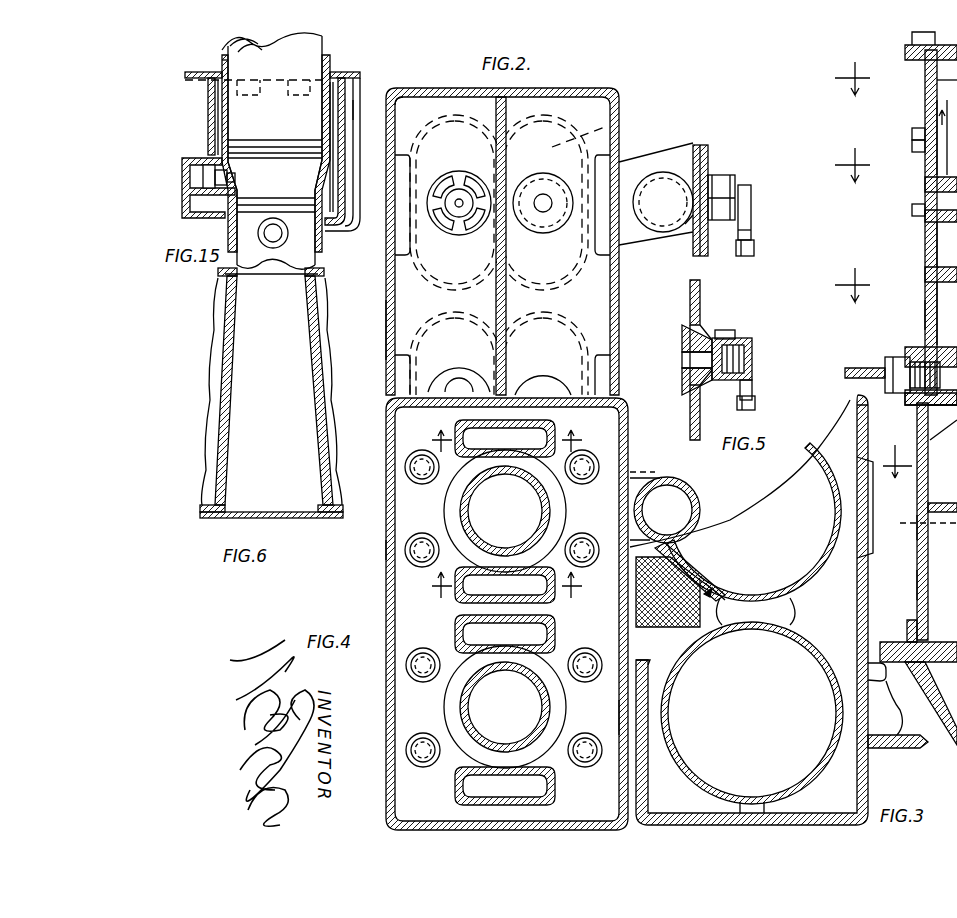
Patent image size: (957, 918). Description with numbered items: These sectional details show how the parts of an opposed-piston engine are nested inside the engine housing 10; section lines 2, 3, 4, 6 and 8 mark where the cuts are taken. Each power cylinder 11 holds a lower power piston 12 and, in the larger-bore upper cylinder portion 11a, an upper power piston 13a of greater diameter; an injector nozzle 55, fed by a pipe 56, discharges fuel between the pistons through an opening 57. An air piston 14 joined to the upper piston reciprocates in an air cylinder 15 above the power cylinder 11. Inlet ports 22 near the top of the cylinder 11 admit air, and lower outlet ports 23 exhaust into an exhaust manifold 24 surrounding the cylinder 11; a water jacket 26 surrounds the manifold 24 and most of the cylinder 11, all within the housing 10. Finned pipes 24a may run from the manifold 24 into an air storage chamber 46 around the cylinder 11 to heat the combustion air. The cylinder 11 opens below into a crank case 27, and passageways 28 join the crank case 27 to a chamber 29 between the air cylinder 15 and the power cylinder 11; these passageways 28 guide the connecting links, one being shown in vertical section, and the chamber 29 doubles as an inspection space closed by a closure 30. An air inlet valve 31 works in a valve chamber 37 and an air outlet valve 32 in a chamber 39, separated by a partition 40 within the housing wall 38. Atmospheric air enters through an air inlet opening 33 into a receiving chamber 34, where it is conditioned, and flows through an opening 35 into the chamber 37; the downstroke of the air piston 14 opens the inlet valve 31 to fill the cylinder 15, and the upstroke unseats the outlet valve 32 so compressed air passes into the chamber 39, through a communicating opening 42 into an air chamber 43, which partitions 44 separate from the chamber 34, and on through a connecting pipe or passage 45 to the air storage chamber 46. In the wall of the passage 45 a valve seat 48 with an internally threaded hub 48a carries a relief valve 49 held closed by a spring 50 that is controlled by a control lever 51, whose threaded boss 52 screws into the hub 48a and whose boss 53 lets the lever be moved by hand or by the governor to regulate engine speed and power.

In FIG. 3, the section line 2— 2 is at (852, 77).
In FIG. 3, the section line 3— 3 is at (852, 163).
In FIG. 3, the section line 4— 4 is at (852, 284).
In FIG. 4, the section line 6— 6 is at (500, 518).
In FIG. 3, the section line 8- 8 is at (897, 460).
In FIG. 4, the engine housing 10 is at (386, 446).
In FIG. 3, the engine housing 10 is at (868, 592).
In FIG. 15, the power cylinder 11 is at (330, 260).
In FIG. 4, the power cylinder 11 is at (545, 520).
In FIG. 15, the cylinder head portion 11a is at (225, 64).
In FIG. 15, the lower power piston 12 is at (306, 252).
In FIG. 15, the upper power piston 13a is at (316, 48).
In FIG. 3, the air piston 14 is at (918, 497).
In FIG. 2, the air cylinder 15 is at (528, 352).
In FIG. 3, the air cylinder 15 is at (805, 655).
In FIG. 15, the inlet ports 22 is at (198, 75).
In FIG. 4, the inlet ports 22 is at (522, 555).
In FIG. 3, the inlet ports 22 is at (925, 310).
In FIG. 3, the outlet ports 23 is at (956, 462).
In FIG. 3, the exhaust manifold 24 is at (917, 496).
In FIG. 4, the pipes 24a is at (420, 532).
In FIG. 15, the water jacket 26 is at (210, 120).
In FIG. 2, the water jacket 26 is at (405, 84).
In FIG. 3, the water jacket 26 is at (918, 428).
In FIG. 3, the crank case 27 is at (925, 580).
In FIG. 6, the passageways 28 is at (247, 343).
In FIG. 4, the passageways 28 is at (528, 432).
In FIG. 3, the passageways 28 is at (917, 524).
In FIG. 3, the chamber 29 is at (930, 240).
In FIG. 3, the closure 30 is at (912, 212).
In FIG. 2, the air inlet valve 31 is at (452, 184).
In FIG. 3, the air inlet valve 31 is at (925, 120).
In FIG. 2, the air outlet valve 32 is at (545, 213).
In FIG. 3, the air inlet opening 33 is at (660, 672).
In FIG. 3, the receiving chamber 34 is at (733, 600).
In FIG. 2, the opening 35 is at (404, 245).
In FIG. 3, the opening 35 is at (925, 90).
In FIG. 2, the air inlet valve chamber 37 is at (430, 108).
In FIG. 3, the air inlet valve chamber 37 is at (920, 60).
In FIG. 2, the side wall 38 is at (386, 332).
In FIG. 2, the chamber 39 is at (560, 105).
In FIG. 2, the separating partition 40 is at (505, 185).
In FIG. 2, the communicating opening 42 is at (602, 245).
In FIG. 3, the air chamber 43 is at (846, 400).
In FIG. 3, the partitions 44 is at (762, 600).
In FIG. 2, the connecting pipe or passage 45 is at (663, 222).
In FIG. 4, the connecting pipe or passage 45 is at (628, 718).
In FIG. 3, the connecting pipe or passage 45 is at (690, 520).
In FIG. 15, the air storage chamber 46 is at (347, 110).
In FIG. 4, the air storage chamber 46 is at (386, 550).
In FIG. 3, the air storage chamber 46 is at (925, 292).
In FIG. 2, the valve seat 48 is at (695, 147).
In FIG. 5, the valve seat 48 is at (697, 318).
In FIG. 2, the hub portion 48a is at (735, 170).
In FIG. 5, the hub portion 48a is at (712, 310).
In FIG. 5, the relief valve 49 is at (690, 390).
In FIG. 5, the spring 50 is at (752, 356).
In FIG. 2, the control lever 51 is at (752, 208).
In FIG. 5, the control lever 51 is at (752, 392).
In FIG. 5, the threaded boss 52 is at (740, 396).
In FIG. 2, the boss 53 is at (752, 245).
In FIG. 15, the injector nozzle 55 is at (181, 165).
In FIG. 3, the injector nozzle 55 is at (920, 345).
In FIG. 3, the pipe 56 is at (866, 372).
In FIG. 15, the opening 57 is at (228, 186).